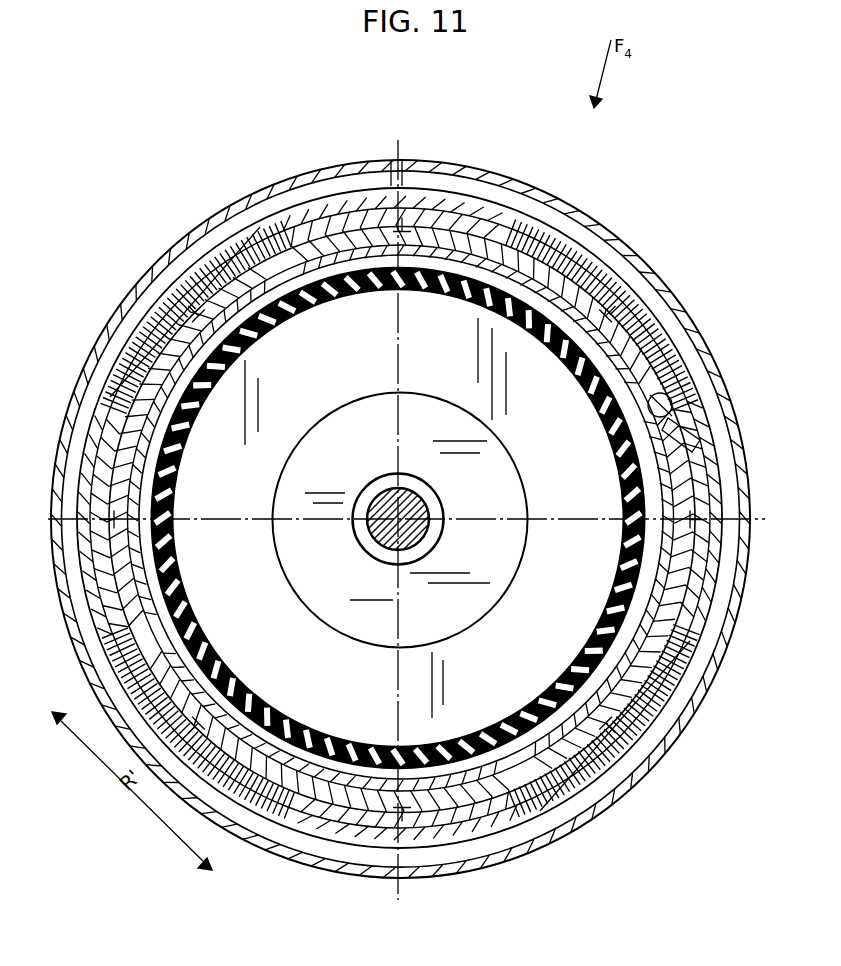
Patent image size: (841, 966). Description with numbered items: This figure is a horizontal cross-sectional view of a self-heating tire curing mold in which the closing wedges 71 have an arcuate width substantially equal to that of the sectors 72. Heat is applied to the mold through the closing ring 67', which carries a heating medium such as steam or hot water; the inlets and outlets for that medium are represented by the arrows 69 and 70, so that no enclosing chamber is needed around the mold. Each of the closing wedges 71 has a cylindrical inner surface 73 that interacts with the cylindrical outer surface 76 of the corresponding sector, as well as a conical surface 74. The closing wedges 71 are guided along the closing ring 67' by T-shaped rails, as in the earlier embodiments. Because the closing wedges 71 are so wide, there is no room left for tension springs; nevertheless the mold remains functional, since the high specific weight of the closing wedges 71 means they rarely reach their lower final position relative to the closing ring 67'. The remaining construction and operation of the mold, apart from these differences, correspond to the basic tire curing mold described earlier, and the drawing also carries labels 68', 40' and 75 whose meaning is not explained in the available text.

The closing ring 67' is at (400, 490).
The intermediate ring 68' is at (399, 463).
The arrow representing inlet 69 is at (368, 147).
The arrow representing outlet 70 is at (427, 162).
The elastic ring 40' is at (398, 458).
The closing wedges 71 is at (542, 248).
The sectors 72 is at (632, 372).
The cylindrical inner surface 73 is at (682, 432).
The conical surface 74 is at (640, 352).
The roller segment 75 is at (607, 300).
The cylindrical outer surface 76 is at (645, 408).